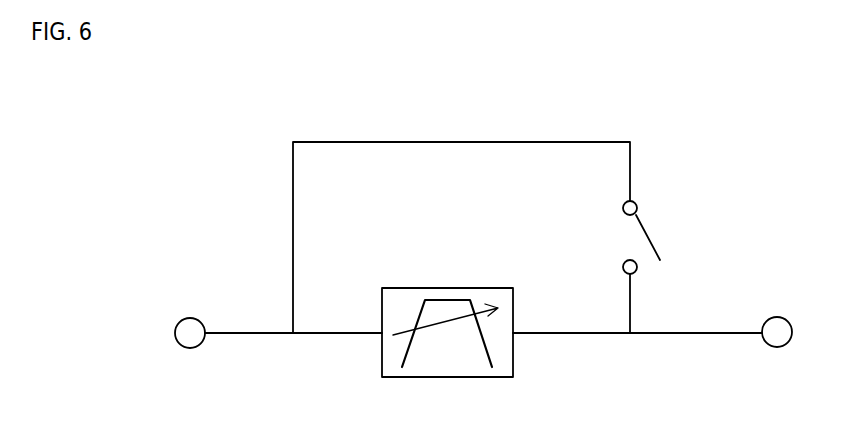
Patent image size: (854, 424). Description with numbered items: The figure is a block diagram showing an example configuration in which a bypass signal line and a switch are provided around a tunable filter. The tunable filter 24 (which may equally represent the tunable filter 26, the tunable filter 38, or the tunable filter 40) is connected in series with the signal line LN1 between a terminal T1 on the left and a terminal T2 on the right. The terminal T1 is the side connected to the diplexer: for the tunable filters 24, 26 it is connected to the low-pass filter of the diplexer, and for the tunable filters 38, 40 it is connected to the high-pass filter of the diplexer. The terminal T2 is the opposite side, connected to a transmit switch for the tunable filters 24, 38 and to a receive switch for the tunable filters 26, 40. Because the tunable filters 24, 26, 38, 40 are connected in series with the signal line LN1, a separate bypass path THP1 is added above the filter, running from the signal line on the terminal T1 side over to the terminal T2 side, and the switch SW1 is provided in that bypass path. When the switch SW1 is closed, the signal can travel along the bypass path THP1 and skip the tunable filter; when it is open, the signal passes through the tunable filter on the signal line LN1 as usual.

The terminal T1 is at (190, 318).
The terminal T2 is at (778, 317).
The signal line LN1 is at (573, 336).
The through path THP1 is at (425, 141).
The switch SW1 is at (646, 228).
The tunable filter 24 is at (428, 301).
The tunable filter 26 is at (428, 301).
The tunable filter 38 is at (428, 301).
The tunable filter 40 is at (424, 287).